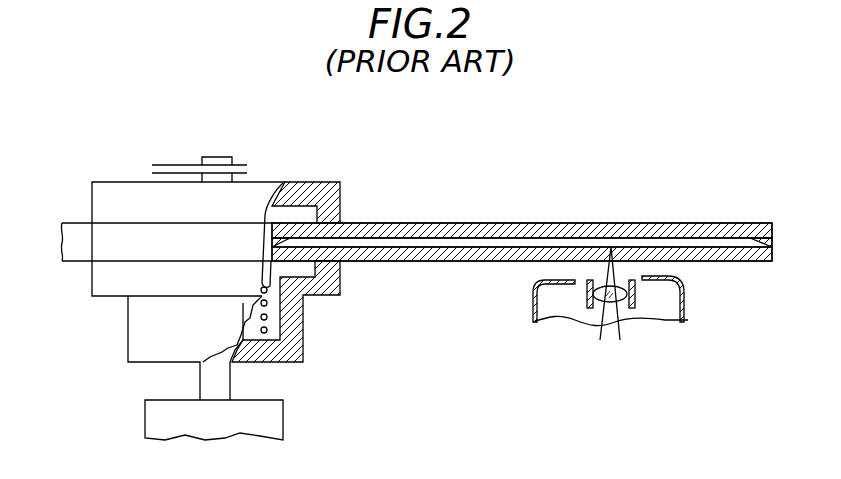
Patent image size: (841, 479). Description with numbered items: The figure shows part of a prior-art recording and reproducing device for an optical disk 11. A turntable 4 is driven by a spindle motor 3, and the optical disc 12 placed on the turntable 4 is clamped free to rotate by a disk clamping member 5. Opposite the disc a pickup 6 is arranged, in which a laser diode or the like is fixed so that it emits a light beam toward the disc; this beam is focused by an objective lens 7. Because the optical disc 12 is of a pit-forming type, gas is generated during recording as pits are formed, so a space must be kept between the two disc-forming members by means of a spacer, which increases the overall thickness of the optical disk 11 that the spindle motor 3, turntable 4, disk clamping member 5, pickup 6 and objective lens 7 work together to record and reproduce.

The spindle motor 3 is at (277, 413).
The turntable 4 is at (111, 288).
The disk clamping member 5 is at (307, 180).
The pickup 6 is at (688, 301).
The objective lens 7 is at (618, 306).
The optical disk 11 is at (477, 191).
The optical disc 12 is at (409, 264).